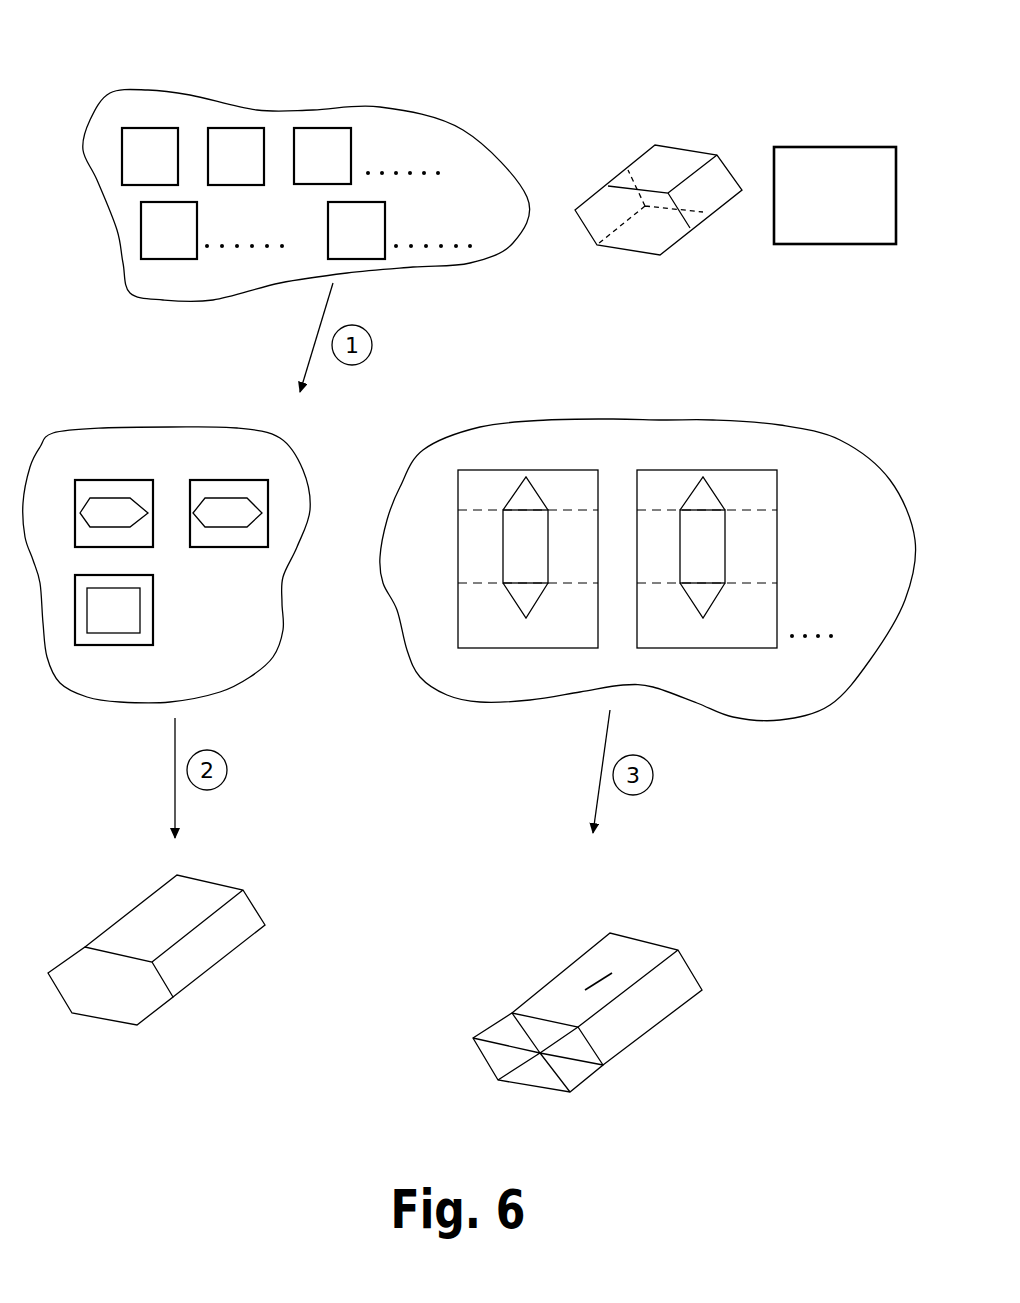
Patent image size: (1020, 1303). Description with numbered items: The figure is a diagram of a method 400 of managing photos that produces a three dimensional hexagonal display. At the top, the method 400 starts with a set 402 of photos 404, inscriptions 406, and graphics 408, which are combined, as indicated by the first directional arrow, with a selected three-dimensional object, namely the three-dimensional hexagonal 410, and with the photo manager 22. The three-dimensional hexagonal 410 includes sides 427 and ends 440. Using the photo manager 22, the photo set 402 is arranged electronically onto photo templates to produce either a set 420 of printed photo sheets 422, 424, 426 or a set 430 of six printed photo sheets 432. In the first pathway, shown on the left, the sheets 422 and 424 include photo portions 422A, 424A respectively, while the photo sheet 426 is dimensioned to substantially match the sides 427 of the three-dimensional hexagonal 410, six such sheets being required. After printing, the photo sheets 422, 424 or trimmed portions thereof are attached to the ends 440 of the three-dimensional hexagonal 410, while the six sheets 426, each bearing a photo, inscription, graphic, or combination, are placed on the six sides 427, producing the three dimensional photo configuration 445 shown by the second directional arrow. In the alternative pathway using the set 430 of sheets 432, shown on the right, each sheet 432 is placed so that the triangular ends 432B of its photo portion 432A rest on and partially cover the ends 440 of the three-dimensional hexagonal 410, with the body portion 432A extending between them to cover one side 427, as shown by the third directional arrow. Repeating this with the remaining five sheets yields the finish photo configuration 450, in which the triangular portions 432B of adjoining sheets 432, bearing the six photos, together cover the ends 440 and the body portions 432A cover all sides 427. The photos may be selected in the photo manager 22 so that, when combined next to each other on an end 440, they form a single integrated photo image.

The method 400 is at (548, 108).
The set of photos, inscriptions, and graphics 402 is at (475, 268).
The photos 404 is at (152, 128).
The inscriptions 406 is at (161, 260).
The graphics 408 is at (375, 260).
The three-dimensional hexagonal 410 is at (632, 252).
The photo manager 22 is at (833, 245).
The sides 427 is at (710, 187).
The ends 440 is at (603, 223).
The set of printed photo sheets 420 is at (113, 430).
The printed photo sheet 422 is at (127, 478).
The photo portion 422A is at (78, 513).
The printed photo sheet 424 is at (240, 478).
The photo portion 424A is at (262, 505).
The photo sheet 426 is at (112, 647).
The set of six printed photo sheets 430 is at (662, 420).
The printed photo sheets 432 is at (550, 470).
The photo portion 432A is at (503, 557).
The triangular ends 432B is at (513, 597).
The three dimensional photo configuration 445 is at (225, 882).
The finish photo configuration 450 is at (693, 968).